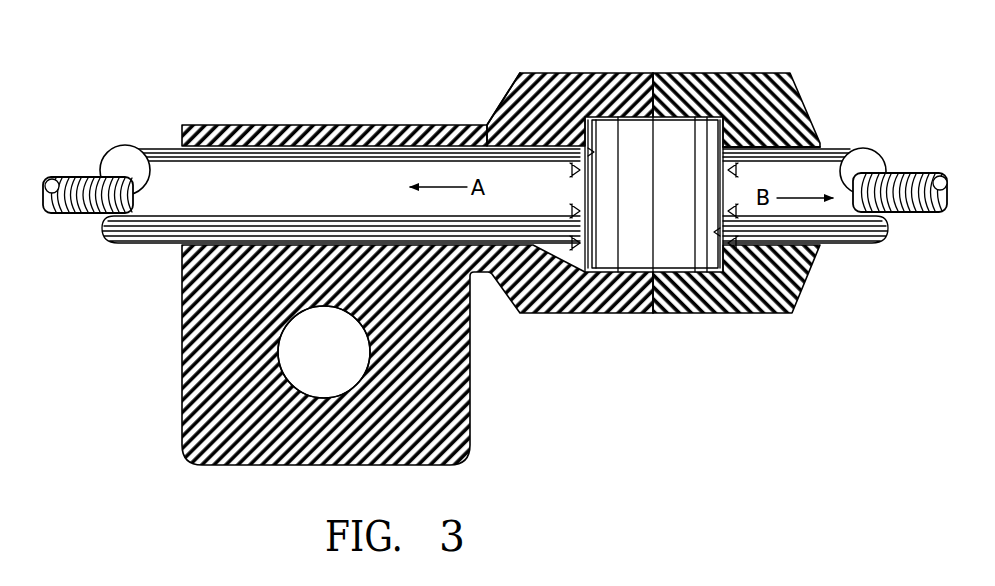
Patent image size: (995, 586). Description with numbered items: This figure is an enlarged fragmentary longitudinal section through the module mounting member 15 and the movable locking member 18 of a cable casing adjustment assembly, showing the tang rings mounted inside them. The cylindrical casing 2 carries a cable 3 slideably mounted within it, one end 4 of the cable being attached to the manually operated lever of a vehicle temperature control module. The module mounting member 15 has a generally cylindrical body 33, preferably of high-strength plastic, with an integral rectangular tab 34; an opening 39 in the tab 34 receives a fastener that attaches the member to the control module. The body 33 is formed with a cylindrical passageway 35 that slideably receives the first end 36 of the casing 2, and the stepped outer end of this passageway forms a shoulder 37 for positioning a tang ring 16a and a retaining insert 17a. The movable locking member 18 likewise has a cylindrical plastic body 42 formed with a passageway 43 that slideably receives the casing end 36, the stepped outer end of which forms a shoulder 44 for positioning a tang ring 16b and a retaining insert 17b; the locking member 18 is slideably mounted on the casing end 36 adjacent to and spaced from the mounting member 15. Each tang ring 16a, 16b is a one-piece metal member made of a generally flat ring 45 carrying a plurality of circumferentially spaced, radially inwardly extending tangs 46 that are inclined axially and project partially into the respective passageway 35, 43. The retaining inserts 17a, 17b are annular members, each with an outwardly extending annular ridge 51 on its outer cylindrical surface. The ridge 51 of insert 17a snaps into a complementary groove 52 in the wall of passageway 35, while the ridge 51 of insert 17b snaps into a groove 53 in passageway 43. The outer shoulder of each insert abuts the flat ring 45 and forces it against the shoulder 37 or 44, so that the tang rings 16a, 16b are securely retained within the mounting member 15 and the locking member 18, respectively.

The casing 2 is at (852, 150).
The cable 3 is at (80, 178).
The cable end 4 is at (82, 214).
The module mounting member 15 is at (560, 73).
The tang ring 16a is at (594, 182).
The tang ring 16b is at (717, 172).
The retaining insert 17a is at (633, 117).
The retaining insert 17b is at (683, 73).
The movable locking member 18 is at (745, 75).
The body 33 is at (380, 125).
The tab 34 is at (470, 428).
The passageway 35 is at (302, 152).
The first end 36 is at (143, 150).
The shoulder 37 is at (533, 85).
The opening 39 is at (338, 396).
The body 42 is at (752, 300).
The passageway 43 is at (822, 147).
The shoulder 44 is at (790, 147).
The ring 45 is at (594, 152).
The tangs 46 is at (573, 170).
The annular ridge 51 is at (732, 73).
The groove 52 is at (613, 117).
The groove 53 is at (694, 272).